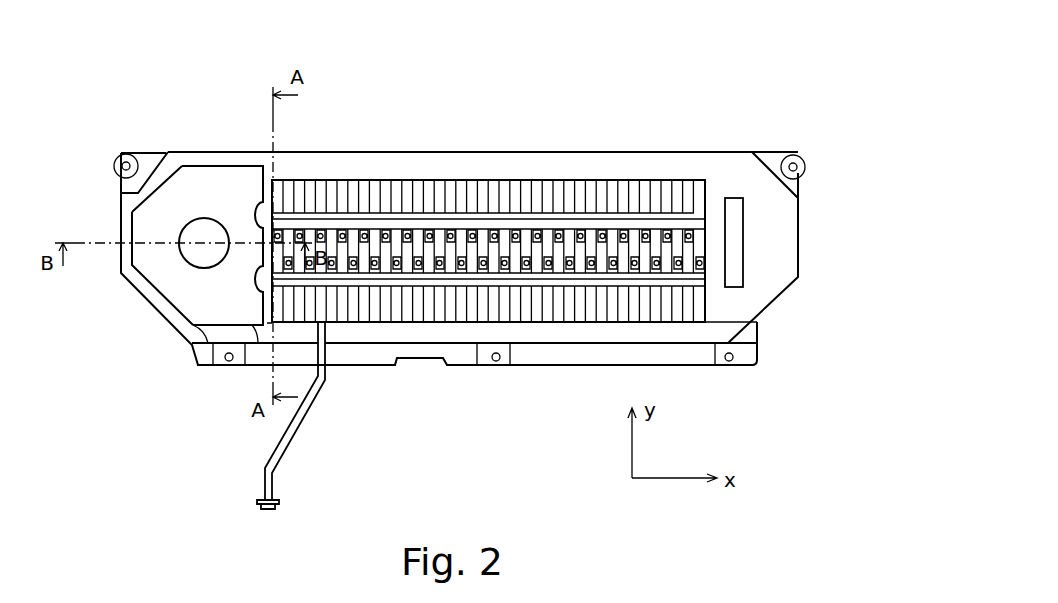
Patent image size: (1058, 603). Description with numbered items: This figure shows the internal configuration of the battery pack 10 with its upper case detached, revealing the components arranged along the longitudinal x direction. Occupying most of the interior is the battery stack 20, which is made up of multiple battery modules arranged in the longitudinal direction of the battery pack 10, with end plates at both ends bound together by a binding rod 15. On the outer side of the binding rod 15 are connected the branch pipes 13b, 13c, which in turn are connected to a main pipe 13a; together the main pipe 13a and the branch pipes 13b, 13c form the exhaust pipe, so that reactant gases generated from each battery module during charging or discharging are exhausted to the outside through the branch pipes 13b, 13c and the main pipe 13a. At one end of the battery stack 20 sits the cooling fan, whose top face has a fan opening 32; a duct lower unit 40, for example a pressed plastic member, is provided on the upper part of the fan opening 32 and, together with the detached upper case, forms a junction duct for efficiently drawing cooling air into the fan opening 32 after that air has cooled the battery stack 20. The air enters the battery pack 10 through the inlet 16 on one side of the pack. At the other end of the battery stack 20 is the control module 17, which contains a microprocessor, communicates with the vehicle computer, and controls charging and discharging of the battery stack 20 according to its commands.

The battery pack 10 is at (697, 88).
The main pipe 13a is at (318, 388).
The branch pipe 13b is at (428, 215).
The branch pipe 13c is at (450, 283).
The binding rod 15 is at (577, 227).
The inlet 16 is at (118, 262).
The control module 17 is at (733, 268).
The battery stack 20 is at (527, 180).
The fan opening 32 is at (205, 258).
The duct lower unit 40 is at (216, 181).